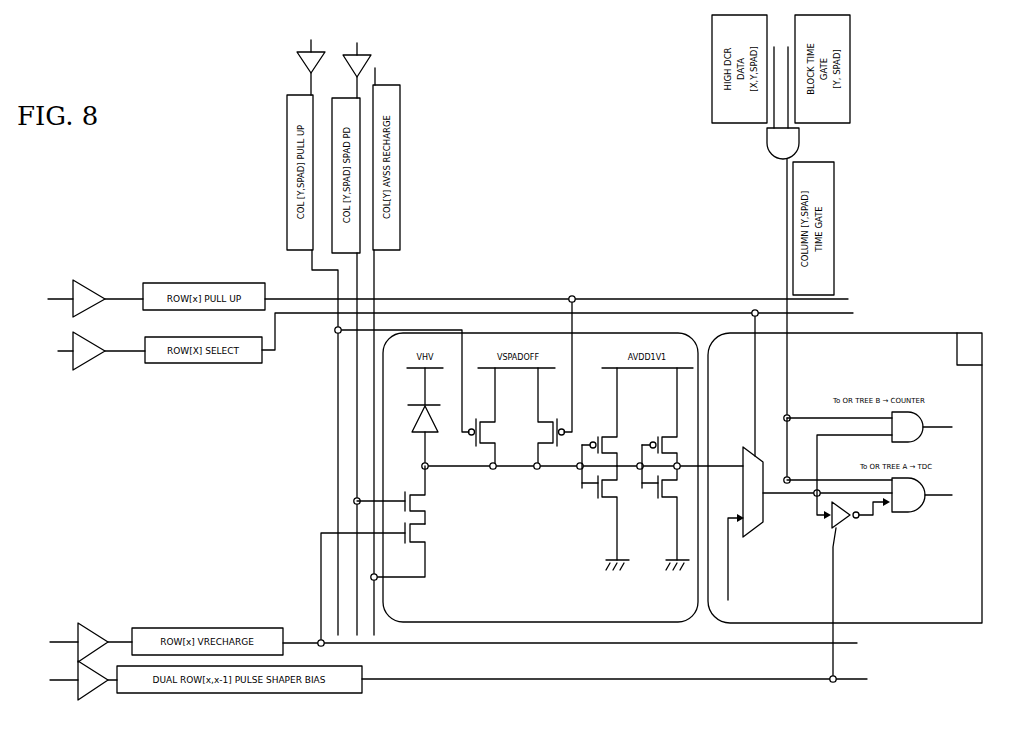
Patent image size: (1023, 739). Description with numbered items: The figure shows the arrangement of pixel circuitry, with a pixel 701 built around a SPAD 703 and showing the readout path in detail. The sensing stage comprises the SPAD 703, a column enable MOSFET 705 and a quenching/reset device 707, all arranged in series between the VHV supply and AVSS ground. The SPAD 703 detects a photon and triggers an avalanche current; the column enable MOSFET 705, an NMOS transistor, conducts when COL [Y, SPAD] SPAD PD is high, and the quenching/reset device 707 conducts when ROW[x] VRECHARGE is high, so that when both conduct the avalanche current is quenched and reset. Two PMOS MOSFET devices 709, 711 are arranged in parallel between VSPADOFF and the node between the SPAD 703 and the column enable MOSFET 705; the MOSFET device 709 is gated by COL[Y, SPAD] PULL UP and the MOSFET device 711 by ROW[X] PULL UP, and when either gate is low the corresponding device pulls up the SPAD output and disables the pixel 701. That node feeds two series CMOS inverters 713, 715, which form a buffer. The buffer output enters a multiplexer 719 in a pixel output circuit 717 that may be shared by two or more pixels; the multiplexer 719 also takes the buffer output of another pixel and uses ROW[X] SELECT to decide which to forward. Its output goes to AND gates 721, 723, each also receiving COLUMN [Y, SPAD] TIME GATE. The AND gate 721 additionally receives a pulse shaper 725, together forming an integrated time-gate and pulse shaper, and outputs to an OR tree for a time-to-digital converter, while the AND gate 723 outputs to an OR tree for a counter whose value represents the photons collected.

The pixel 701 is at (540, 477).
The SPAD 703 is at (435, 404).
The column enable MOSFET 705 is at (425, 489).
The quenching/reset device 707 is at (415, 543).
The MOSFET device 709 is at (481, 430).
The MOSFET device 711 is at (543, 430).
The CMOS inverter 713 is at (608, 433).
The CMOS inverter 715 is at (665, 433).
The pixel output circuit 717 is at (845, 478).
The multiplexer 719 is at (762, 522).
The AND gate 721 is at (927, 470).
The AND gate 723 is at (893, 413).
The pulse shaper 725 is at (846, 506).